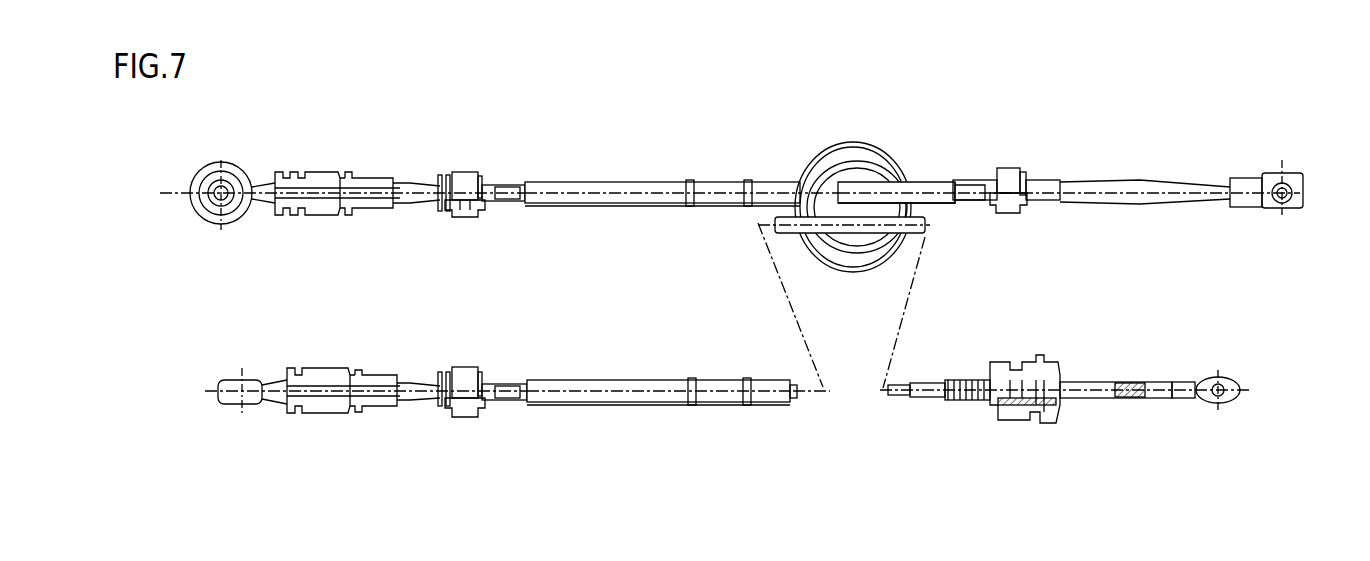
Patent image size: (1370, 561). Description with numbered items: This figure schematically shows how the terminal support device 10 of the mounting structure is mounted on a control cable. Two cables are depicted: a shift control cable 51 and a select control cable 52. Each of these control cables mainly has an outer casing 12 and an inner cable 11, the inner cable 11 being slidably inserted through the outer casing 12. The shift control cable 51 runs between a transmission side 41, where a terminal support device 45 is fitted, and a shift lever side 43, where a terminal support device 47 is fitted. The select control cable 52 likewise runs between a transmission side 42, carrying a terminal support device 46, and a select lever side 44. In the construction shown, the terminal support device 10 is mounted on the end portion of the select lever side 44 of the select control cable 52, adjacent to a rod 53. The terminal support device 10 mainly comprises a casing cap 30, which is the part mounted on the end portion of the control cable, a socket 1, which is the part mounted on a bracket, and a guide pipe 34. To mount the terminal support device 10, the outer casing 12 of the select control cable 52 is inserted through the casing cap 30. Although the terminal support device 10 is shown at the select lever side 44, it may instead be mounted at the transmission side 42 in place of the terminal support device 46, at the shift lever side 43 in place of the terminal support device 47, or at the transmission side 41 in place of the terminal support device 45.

The socket 1 is at (1003, 365).
The terminal support device 10 is at (1088, 374).
The inner cable 11 is at (895, 397).
The outer casing 12 is at (925, 398).
The casing cap 30 is at (968, 380).
The guide pipe 34 is at (1105, 381).
The transmission side 41 is at (188, 193).
The transmission side 42 is at (242, 368).
The shift lever side 43 is at (1283, 208).
The select lever side 44 is at (1218, 365).
The terminal support device 45 is at (463, 173).
The terminal support device 46 is at (464, 370).
The terminal support device 47 is at (1007, 170).
The shift control cable 51 is at (643, 163).
The select control cable 52 is at (642, 364).
The rod 53 is at (1145, 399).